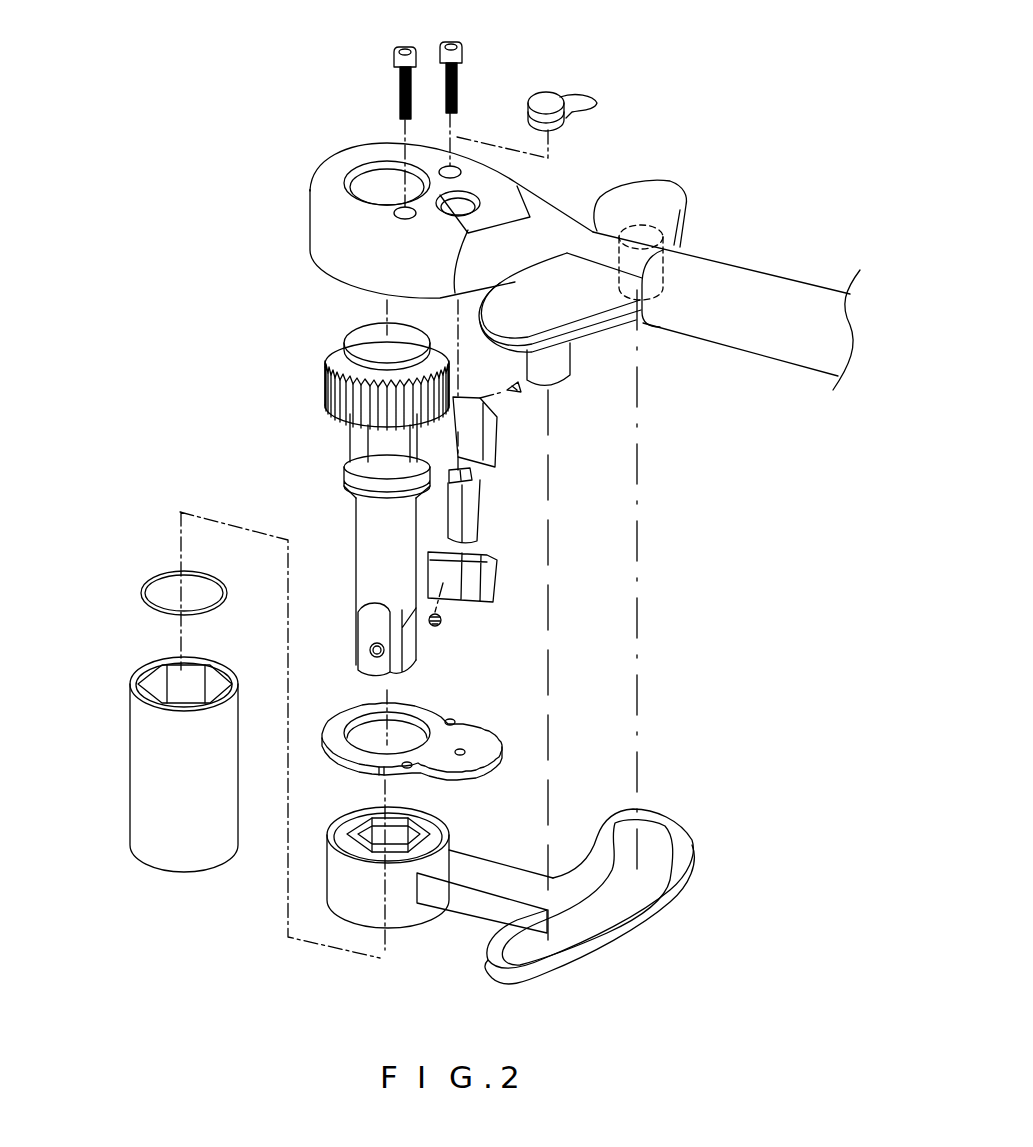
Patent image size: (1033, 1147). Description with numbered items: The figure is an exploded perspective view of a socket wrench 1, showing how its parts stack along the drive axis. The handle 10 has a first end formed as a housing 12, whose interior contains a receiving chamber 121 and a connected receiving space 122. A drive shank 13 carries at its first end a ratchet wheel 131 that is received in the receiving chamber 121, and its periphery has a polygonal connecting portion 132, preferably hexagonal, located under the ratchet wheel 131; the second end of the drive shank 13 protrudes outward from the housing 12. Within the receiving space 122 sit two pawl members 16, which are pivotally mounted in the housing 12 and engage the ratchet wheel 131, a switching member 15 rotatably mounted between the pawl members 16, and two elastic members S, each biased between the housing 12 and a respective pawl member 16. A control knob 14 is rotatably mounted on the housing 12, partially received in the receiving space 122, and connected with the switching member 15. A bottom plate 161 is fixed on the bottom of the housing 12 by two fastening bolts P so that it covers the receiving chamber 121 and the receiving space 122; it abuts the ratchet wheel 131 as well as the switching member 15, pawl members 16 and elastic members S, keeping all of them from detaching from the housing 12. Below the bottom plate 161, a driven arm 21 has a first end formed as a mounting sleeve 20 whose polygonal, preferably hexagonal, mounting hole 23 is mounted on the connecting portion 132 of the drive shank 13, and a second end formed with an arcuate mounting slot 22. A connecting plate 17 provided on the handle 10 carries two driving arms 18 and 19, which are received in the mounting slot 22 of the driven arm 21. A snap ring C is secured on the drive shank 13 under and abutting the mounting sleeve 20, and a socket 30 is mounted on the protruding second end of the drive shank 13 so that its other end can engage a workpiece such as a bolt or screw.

The socket wrench 1 is at (303, 109).
The handle 10 is at (798, 297).
The housing 12 is at (322, 226).
The receiving chamber 121 is at (372, 172).
The receiving space 122 is at (473, 202).
The fastening bolts P is at (448, 43).
The control knob 14 is at (571, 97).
The connecting plate 17 is at (655, 190).
The driving arm 18 is at (558, 367).
The driving arm 19 is at (650, 293).
The ratchet wheel 131 is at (325, 376).
The polygonal connecting portion 132 is at (356, 443).
The drive shank 13 is at (364, 638).
The elastic members S is at (437, 622).
The switching member 15 is at (478, 507).
The pawl members 16 is at (470, 582).
The bottom plate 161 is at (470, 722).
The mounting sleeve 20 is at (400, 912).
The driven arm 21 is at (507, 867).
The arcuate mounting slot 22 is at (660, 837).
The polygonal mounting hole 23 is at (373, 828).
The socket 30 is at (140, 777).
The snap ring C is at (166, 576).